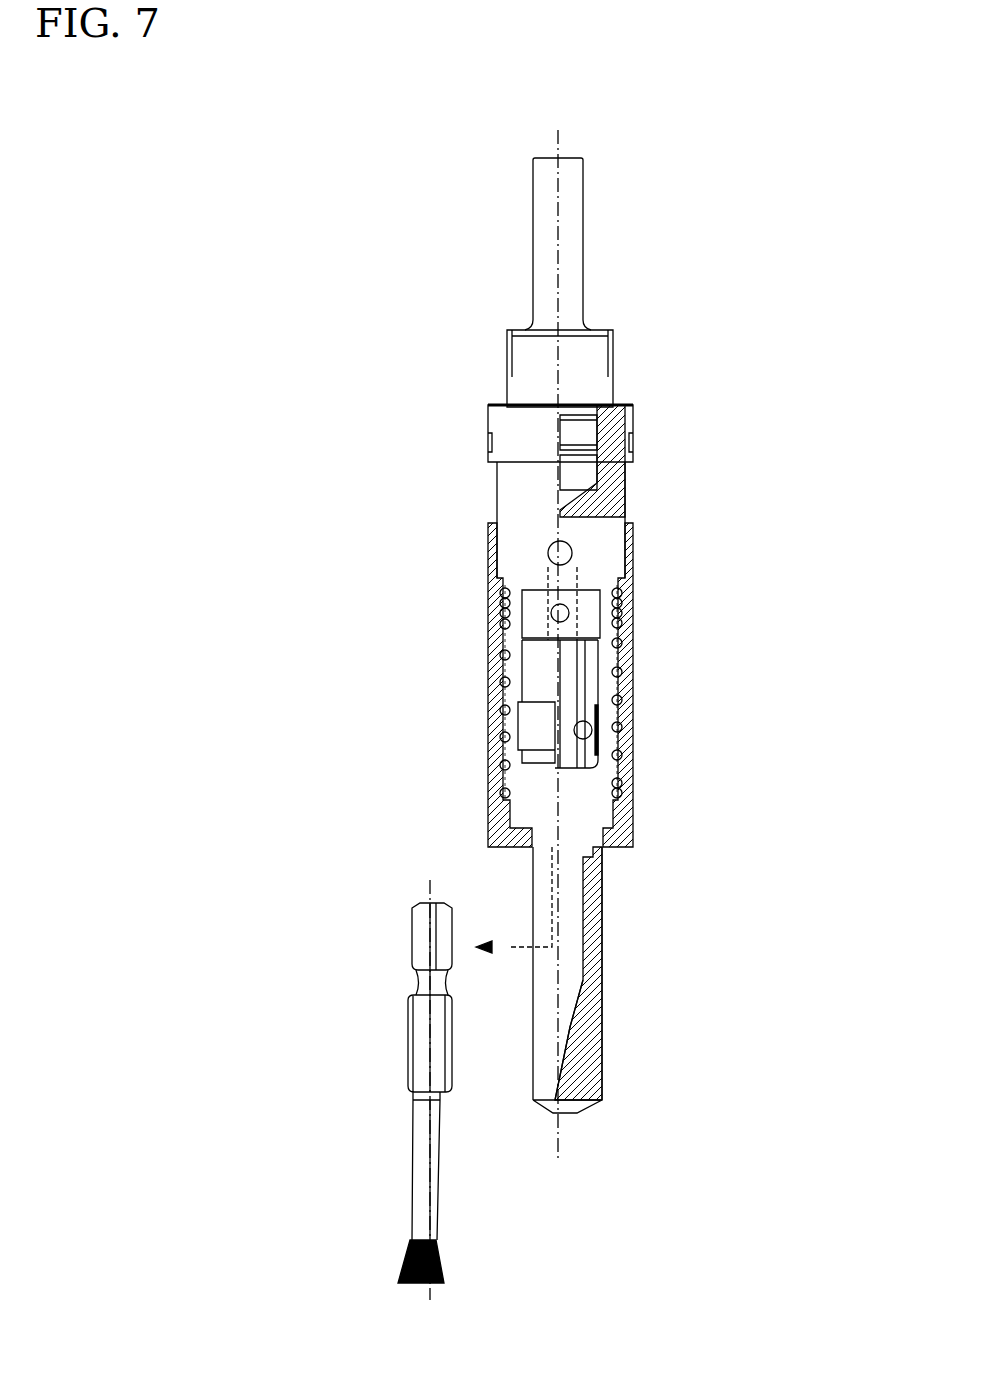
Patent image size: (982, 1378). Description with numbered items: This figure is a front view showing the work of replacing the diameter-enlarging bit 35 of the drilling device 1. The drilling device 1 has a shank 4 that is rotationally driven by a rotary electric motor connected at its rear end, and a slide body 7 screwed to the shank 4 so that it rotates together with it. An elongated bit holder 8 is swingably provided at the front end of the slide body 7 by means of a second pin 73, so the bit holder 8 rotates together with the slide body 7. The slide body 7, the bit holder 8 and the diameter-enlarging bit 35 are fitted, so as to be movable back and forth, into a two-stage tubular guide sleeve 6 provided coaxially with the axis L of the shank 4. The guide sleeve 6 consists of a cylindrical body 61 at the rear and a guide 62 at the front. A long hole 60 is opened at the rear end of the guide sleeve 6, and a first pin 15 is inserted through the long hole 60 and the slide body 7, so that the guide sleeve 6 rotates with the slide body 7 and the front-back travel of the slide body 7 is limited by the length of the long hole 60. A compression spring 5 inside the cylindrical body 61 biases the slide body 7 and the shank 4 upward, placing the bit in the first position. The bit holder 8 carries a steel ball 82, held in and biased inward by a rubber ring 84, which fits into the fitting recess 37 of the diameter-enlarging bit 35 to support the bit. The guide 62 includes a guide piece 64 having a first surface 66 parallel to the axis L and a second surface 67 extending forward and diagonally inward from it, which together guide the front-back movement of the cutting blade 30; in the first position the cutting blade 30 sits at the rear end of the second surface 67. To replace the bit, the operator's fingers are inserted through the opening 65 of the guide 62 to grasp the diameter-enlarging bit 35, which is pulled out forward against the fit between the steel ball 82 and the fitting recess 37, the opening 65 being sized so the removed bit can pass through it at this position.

The drilling device 1 is at (658, 289).
The axis L is at (560, 214).
The shank 4 is at (507, 351).
The slide body 7 is at (490, 437).
The first pin 15 is at (571, 553).
The long hole 60 is at (575, 575).
The second pin 73 is at (569, 613).
The compression spring 5 is at (622, 611).
The bit holder 8 is at (505, 704).
The rubber ring 84 is at (530, 727).
The steel ball 82 is at (598, 726).
The guide sleeve 6 is at (510, 818).
The cylindrical body 61 is at (503, 795).
The guide 62 is at (530, 882).
The guide piece 64 is at (617, 973).
The opening 65 is at (533, 905).
The first surface 66 is at (585, 957).
The second surface 67 is at (573, 1048).
The fitting recess 37 is at (405, 978).
The diameter-enlarging bit 35 is at (410, 1158).
The cutting blade 30 is at (398, 1263).